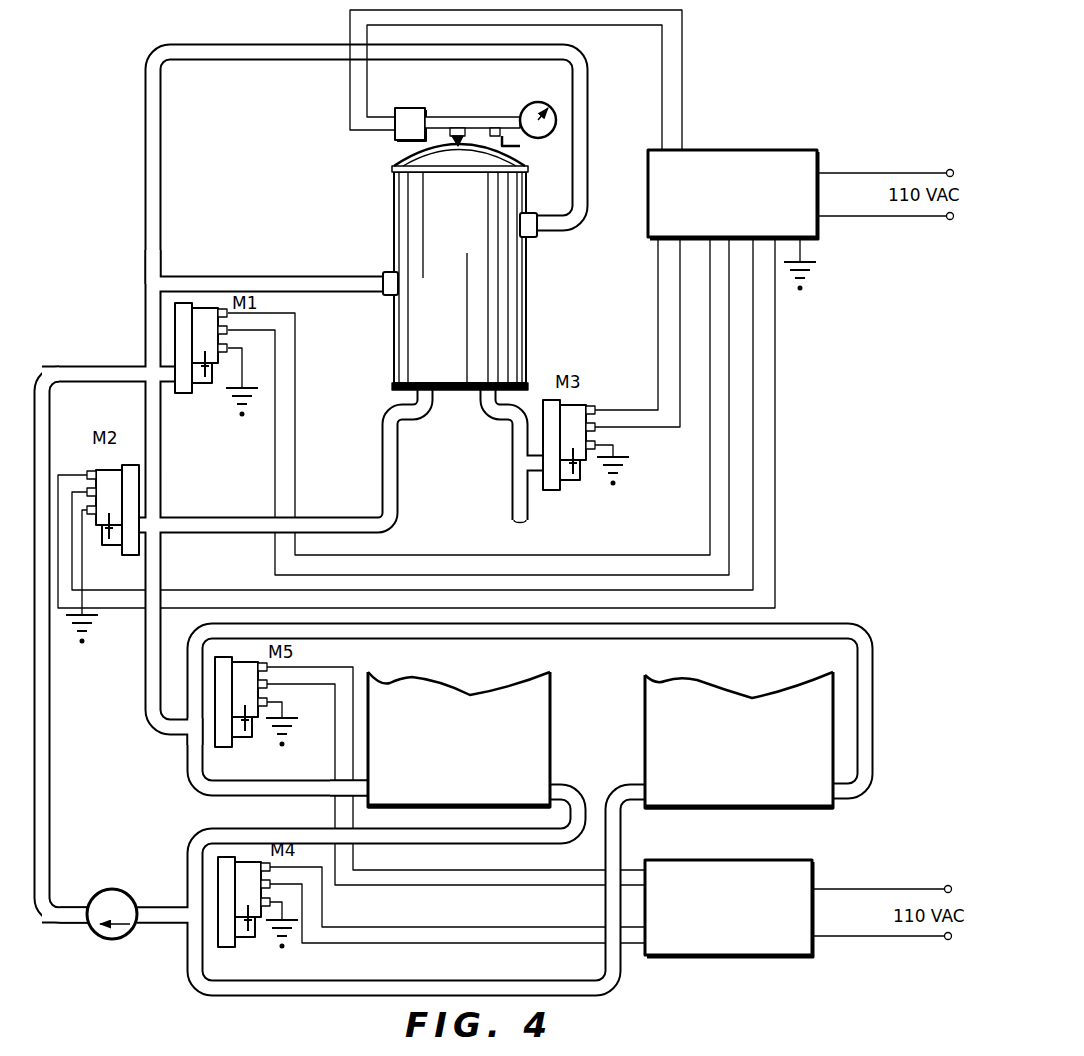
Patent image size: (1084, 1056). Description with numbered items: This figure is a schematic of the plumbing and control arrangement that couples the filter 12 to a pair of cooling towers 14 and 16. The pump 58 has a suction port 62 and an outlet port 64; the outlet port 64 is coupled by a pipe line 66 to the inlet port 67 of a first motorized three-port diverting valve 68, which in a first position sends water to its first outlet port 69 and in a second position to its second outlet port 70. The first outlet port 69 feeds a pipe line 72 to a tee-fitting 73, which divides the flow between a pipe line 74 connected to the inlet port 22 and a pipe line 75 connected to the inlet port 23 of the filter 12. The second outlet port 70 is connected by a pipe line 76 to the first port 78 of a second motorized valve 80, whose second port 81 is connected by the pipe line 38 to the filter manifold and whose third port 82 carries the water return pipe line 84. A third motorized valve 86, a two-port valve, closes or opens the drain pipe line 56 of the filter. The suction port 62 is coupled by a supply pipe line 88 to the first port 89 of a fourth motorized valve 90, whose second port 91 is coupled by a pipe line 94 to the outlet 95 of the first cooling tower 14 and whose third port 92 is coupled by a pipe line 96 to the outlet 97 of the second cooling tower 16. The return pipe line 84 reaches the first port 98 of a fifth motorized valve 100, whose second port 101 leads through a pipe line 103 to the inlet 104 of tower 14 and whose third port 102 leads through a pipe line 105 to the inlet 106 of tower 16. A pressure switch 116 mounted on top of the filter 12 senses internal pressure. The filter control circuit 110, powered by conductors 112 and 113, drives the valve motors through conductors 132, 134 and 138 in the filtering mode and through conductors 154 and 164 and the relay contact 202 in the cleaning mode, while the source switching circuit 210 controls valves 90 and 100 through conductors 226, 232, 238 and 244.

The filter 12 is at (390, 233).
The first cooling tower 14 is at (459, 739).
The second cooling tower 16 is at (739, 740).
The inlet port 22 is at (533, 237).
The inlet port 23 is at (383, 278).
The pipe line 38 is at (417, 412).
The drain pipe line 56 is at (480, 405).
The pump 58 is at (90, 935).
The suction port 62 is at (138, 933).
The outlet port 64 is at (80, 905).
The pipe line 66 is at (45, 725).
The inlet port 67 is at (147, 362).
The first motorized 3-port diverting valve 68 is at (212, 400).
The first outlet port 69 is at (147, 316).
The second outlet port 70 is at (147, 395).
The pipe line 72 is at (145, 292).
The tee-fitting 73 is at (145, 272).
The pipe line 74 is at (145, 160).
The pipe line 75 is at (297, 277).
The pipe line 76 is at (160, 432).
The first port 78 is at (163, 507).
The second motorized 3-port diverting valve 80 is at (85, 468).
The second port 81 is at (163, 517).
The third port 82 is at (163, 543).
The water return pipe line 84 is at (145, 633).
The third motorized diverting valve 86 is at (562, 492).
The supply pipe line 88 is at (165, 925).
The first port 89 is at (150, 910).
The fourth motorized 3-port diverting valve 90 is at (250, 942).
The second port 91 is at (185, 905).
The third port 92 is at (205, 940).
The pipe line 94 is at (395, 843).
The outlet 95 is at (558, 775).
The pipe line 96 is at (385, 980).
The outlet 97 is at (640, 778).
The first port 98 is at (185, 735).
The fifth motorized 3-port diverting valve 100 is at (245, 748).
The second port 101 is at (185, 748).
The third port 102 is at (150, 700).
The pipe line 103 is at (272, 790).
The inlet 104 is at (365, 806).
The pipe line 105 is at (625, 640).
The inlet 106 is at (848, 800).
The filter control circuit 110 is at (783, 150).
The conductor 112 is at (890, 173).
The conductor 113 is at (884, 216).
The pressure switch 116 is at (395, 138).
The conductor 132 is at (710, 478).
The conductor 134 is at (775, 522).
The conductor 138 is at (658, 285).
The conductor 154 is at (642, 424).
The conductor 164 is at (753, 488).
The contact 202 is at (729, 512).
The source switching circuit 210 is at (752, 860).
The conductor 226 is at (520, 870).
The conductor 232 is at (452, 885).
The conductor 238 is at (533, 927).
The conductor 244 is at (572, 943).